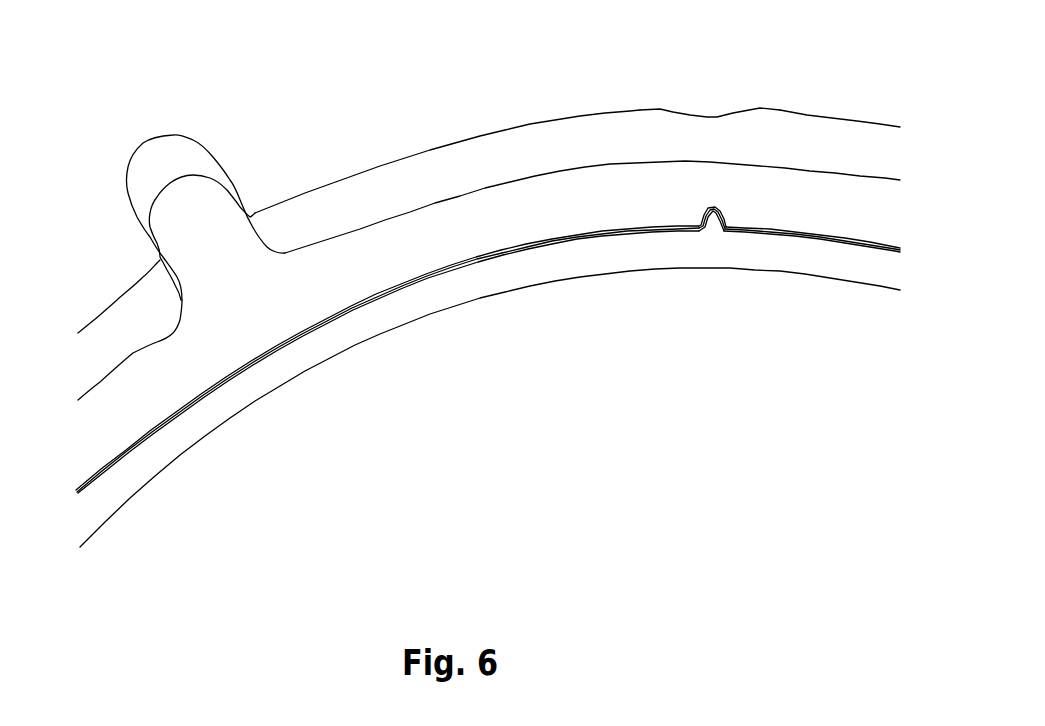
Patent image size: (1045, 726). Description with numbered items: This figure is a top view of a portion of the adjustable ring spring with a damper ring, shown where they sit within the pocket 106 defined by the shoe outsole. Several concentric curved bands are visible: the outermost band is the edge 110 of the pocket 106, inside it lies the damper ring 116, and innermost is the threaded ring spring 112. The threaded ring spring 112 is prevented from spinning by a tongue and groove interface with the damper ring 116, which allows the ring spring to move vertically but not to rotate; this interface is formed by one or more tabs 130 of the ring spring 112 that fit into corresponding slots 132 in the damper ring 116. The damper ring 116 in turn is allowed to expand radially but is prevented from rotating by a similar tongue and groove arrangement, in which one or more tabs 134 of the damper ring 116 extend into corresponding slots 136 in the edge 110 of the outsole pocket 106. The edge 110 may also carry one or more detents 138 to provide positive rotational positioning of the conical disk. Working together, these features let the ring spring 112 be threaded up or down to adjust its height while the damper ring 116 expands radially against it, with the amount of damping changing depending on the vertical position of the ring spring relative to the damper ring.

The pocket 106 is at (805, 138).
The edge of pocket 110 is at (404, 158).
The threaded ring spring 112 is at (382, 318).
The damper ring 116 is at (157, 345).
The tab of ring spring 130 is at (710, 225).
The slot in damper ring 132 is at (700, 210).
The tab of damper ring 134 is at (192, 215).
The slot in edge 136 is at (210, 152).
The detent 138 is at (716, 105).